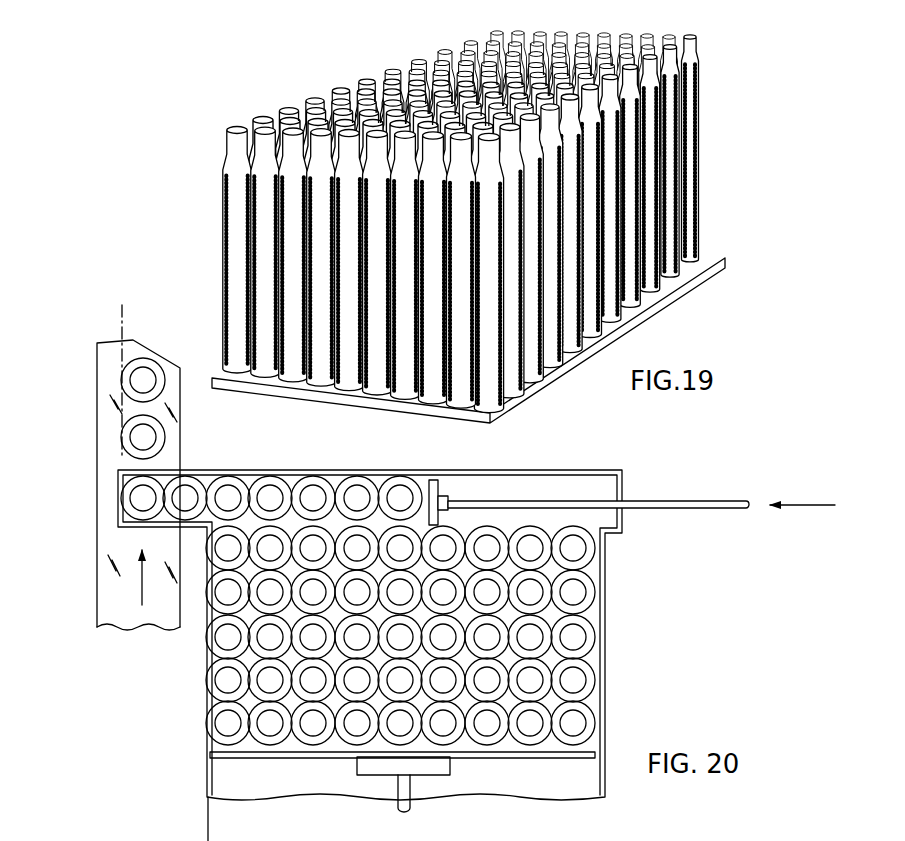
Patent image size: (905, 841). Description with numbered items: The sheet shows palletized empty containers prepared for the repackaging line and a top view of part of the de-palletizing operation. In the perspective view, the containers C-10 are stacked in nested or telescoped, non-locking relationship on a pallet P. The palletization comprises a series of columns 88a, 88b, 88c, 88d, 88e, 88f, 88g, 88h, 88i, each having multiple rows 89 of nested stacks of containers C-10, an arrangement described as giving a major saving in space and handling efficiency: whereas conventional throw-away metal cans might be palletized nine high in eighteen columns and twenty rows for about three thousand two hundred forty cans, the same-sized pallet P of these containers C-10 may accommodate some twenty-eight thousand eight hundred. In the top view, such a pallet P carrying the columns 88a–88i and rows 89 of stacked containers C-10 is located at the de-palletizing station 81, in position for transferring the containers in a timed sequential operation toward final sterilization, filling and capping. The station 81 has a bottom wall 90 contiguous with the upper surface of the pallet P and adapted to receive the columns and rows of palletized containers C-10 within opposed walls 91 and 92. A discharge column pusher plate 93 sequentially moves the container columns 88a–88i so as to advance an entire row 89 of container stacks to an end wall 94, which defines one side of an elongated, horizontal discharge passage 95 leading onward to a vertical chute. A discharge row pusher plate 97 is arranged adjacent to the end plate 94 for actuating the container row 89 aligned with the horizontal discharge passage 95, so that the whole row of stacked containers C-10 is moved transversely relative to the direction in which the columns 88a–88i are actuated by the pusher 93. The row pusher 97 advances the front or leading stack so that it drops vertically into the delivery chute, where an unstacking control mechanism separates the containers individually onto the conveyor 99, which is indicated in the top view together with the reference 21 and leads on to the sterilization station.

In FIG. 19, the pallet P is at (729, 257).
In FIG. 19, the rows of nested stacks of containers 89 is at (300, 101).
In FIG. 20, the rows of nested stacks of containers 89 is at (592, 592).
In FIG. 19, the containers C-10 is at (651, 79).
In FIG. 20, the containers C-10 is at (534, 672).
In FIG. 19, the column of containers 88a is at (221, 170).
In FIG. 20, the column of containers 88a is at (230, 762).
In FIG. 19, the column of containers 88b is at (256, 194).
In FIG. 19, the column of containers 88c is at (289, 207).
In FIG. 19, the column of containers 88d is at (315, 225).
In FIG. 19, the column of containers 88e is at (346, 231).
In FIG. 19, the column of containers 88f is at (372, 254).
In FIG. 19, the column of containers 88g is at (409, 293).
In FIG. 19, the column of containers 88h is at (436, 317).
In FIG. 19, the column of containers 88i is at (462, 347).
In FIG. 20, the column of containers 88i is at (576, 762).
In FIG. 20, the conveyor 21 is at (118, 325).
In FIG. 20, the de-palletizing station 81 is at (318, 635).
In FIG. 20, the bottom wall 90 is at (218, 770).
In FIG. 20, the wall 91 is at (205, 688).
In FIG. 20, the wall 92 is at (534, 718).
In FIG. 20, the discharge column pusher plate 93 is at (464, 760).
In FIG. 20, the end wall 94 is at (567, 483).
In FIG. 20, the horizontal discharge passage 95 is at (155, 500).
In FIG. 20, the discharge row pusher plate 97 is at (440, 480).
In FIG. 20, the conveyor 99 is at (110, 600).